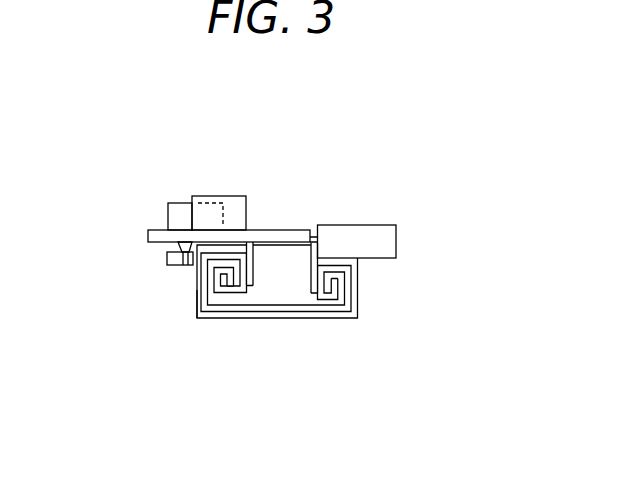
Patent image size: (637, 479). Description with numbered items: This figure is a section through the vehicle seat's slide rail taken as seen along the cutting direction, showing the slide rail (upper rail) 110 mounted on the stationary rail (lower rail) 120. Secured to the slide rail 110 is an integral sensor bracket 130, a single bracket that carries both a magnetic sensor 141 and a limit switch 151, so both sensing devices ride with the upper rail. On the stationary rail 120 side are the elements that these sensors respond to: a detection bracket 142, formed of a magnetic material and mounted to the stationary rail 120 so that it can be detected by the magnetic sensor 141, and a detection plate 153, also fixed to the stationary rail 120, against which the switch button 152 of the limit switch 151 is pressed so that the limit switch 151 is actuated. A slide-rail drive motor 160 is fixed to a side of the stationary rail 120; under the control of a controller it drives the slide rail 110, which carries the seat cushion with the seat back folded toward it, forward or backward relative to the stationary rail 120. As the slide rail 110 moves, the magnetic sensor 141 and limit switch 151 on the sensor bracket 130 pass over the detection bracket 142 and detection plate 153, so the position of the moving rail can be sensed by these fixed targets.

The slide rail (upper rail) 110 is at (245, 300).
The stationary rail (lower rail) 120 is at (358, 300).
The integral sensor bracket 130 is at (287, 230).
The magnetic sensor 141 is at (178, 202).
The detection bracket 142 is at (197, 300).
The limit switch 151 is at (233, 196).
The switch button 152 is at (186, 256).
The detection plate 153 is at (167, 256).
The slide-rail drive motor 160 is at (375, 225).